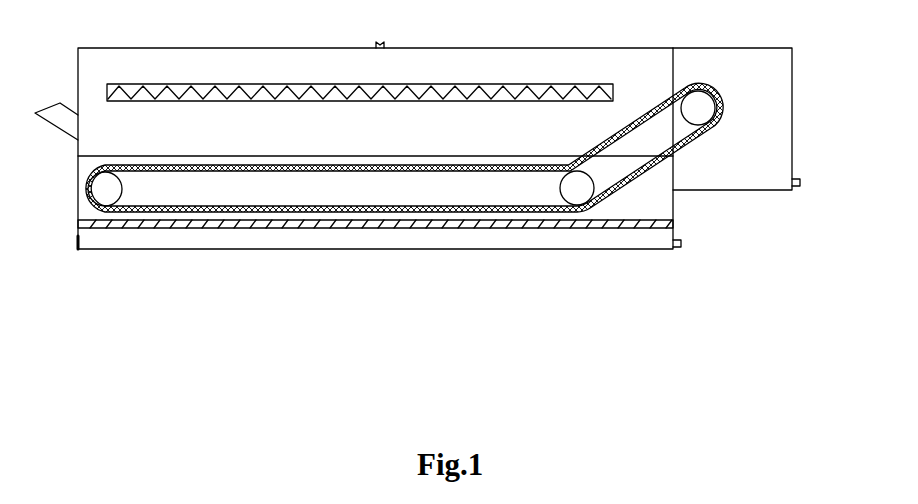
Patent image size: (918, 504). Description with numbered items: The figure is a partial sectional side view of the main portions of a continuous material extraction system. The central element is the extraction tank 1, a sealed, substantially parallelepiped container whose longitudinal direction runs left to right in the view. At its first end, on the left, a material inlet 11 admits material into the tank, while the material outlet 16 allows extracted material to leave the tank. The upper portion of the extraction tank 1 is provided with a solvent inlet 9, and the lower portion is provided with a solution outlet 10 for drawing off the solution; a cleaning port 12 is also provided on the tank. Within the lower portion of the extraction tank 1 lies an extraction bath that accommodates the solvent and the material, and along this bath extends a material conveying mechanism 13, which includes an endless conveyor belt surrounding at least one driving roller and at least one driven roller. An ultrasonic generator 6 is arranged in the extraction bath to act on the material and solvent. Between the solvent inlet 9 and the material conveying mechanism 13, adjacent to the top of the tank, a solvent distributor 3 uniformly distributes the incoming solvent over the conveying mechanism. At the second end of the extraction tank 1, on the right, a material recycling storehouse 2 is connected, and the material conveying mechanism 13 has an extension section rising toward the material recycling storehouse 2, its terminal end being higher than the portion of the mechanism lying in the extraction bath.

The extraction tank 1 is at (353, 141).
The material recycling storehouse 2 is at (753, 119).
The solvent distributor 3 is at (360, 57).
The ultrasonic generator 6 is at (397, 208).
The solvent inlet 9 is at (392, 29).
The solution outlet 10 is at (694, 232).
The material inlet 11 is at (45, 108).
The cleaning port 12 is at (57, 233).
The material conveying mechanism 13 is at (379, 147).
The material outlet 16 is at (813, 169).